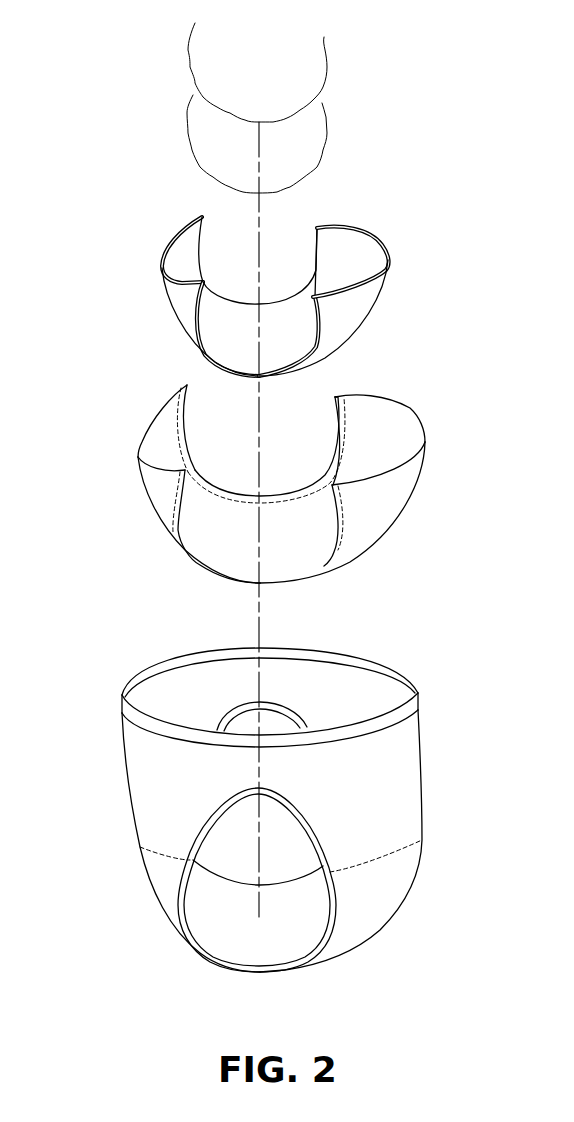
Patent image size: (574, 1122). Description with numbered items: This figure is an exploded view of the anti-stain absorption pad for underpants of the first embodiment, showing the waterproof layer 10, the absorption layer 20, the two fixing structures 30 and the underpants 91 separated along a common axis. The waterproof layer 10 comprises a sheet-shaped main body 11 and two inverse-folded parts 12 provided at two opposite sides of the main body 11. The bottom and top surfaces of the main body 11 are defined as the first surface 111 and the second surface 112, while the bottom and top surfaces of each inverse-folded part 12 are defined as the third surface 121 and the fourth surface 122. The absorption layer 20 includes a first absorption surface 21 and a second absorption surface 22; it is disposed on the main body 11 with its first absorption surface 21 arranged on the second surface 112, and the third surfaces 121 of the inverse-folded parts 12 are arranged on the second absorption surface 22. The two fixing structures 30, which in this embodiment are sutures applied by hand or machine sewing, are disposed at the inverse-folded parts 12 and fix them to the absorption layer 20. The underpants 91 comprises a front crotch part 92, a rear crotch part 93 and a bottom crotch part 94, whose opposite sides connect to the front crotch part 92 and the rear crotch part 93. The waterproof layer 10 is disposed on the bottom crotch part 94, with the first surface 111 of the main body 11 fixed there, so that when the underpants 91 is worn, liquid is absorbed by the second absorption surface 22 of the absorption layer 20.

The waterproof layer 10 is at (263, 472).
The main body 11 is at (379, 494).
The first surface 111 is at (393, 508).
The second surface 112 is at (403, 420).
The inverse-folded part 12 is at (178, 384).
The third surface 121 is at (333, 560).
The fourth surface 122 is at (338, 397).
The absorption layer 20 is at (237, 281).
The first absorption surface 21 is at (367, 305).
The second absorption surface 22 is at (368, 240).
The fixing structure 30 is at (180, 50).
The underpants 91 is at (250, 827).
The front crotch part 92 is at (140, 795).
The rear crotch part 93 is at (407, 807).
The bottom crotch part 94 is at (240, 940).